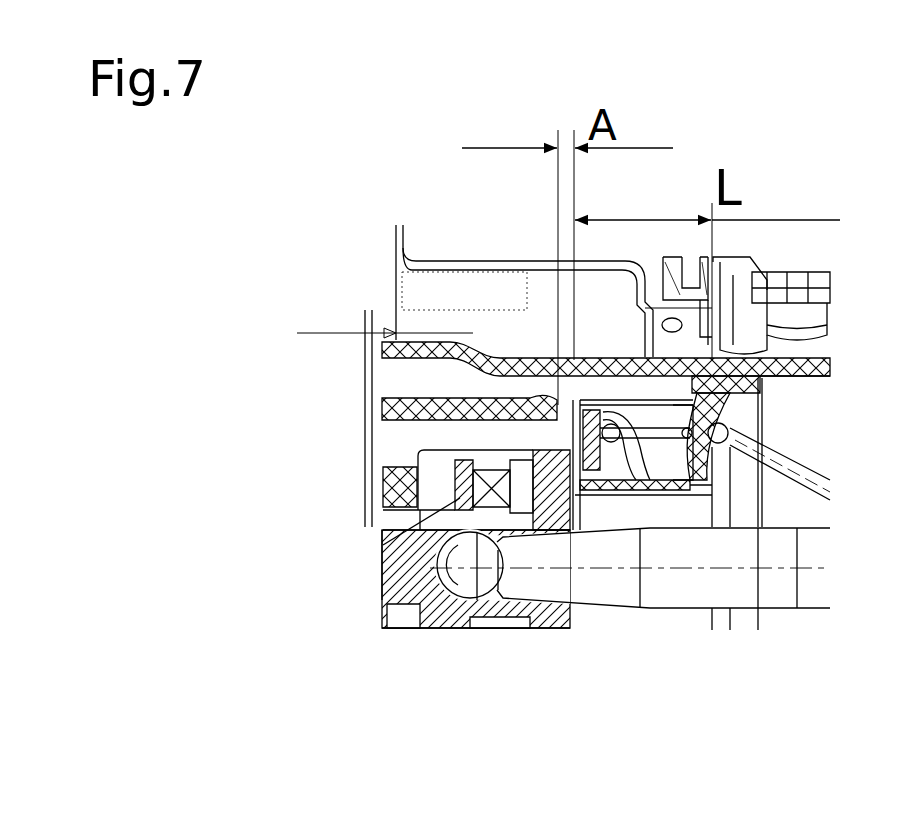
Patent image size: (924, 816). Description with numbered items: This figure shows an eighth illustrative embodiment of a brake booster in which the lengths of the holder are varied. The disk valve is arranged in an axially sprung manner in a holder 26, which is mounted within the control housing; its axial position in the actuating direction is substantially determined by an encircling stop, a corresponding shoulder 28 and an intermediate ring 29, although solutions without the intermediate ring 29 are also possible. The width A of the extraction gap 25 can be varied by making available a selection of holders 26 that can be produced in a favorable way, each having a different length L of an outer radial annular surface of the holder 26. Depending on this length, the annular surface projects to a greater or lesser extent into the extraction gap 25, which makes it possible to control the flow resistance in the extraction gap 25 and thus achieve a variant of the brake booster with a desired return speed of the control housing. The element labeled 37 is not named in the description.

The extraction gap 25 is at (565, 412).
The holder 26 is at (760, 395).
The shoulder 28 is at (708, 353).
The intermediate ring 29 is at (692, 490).
The partition wall 37 is at (603, 352).